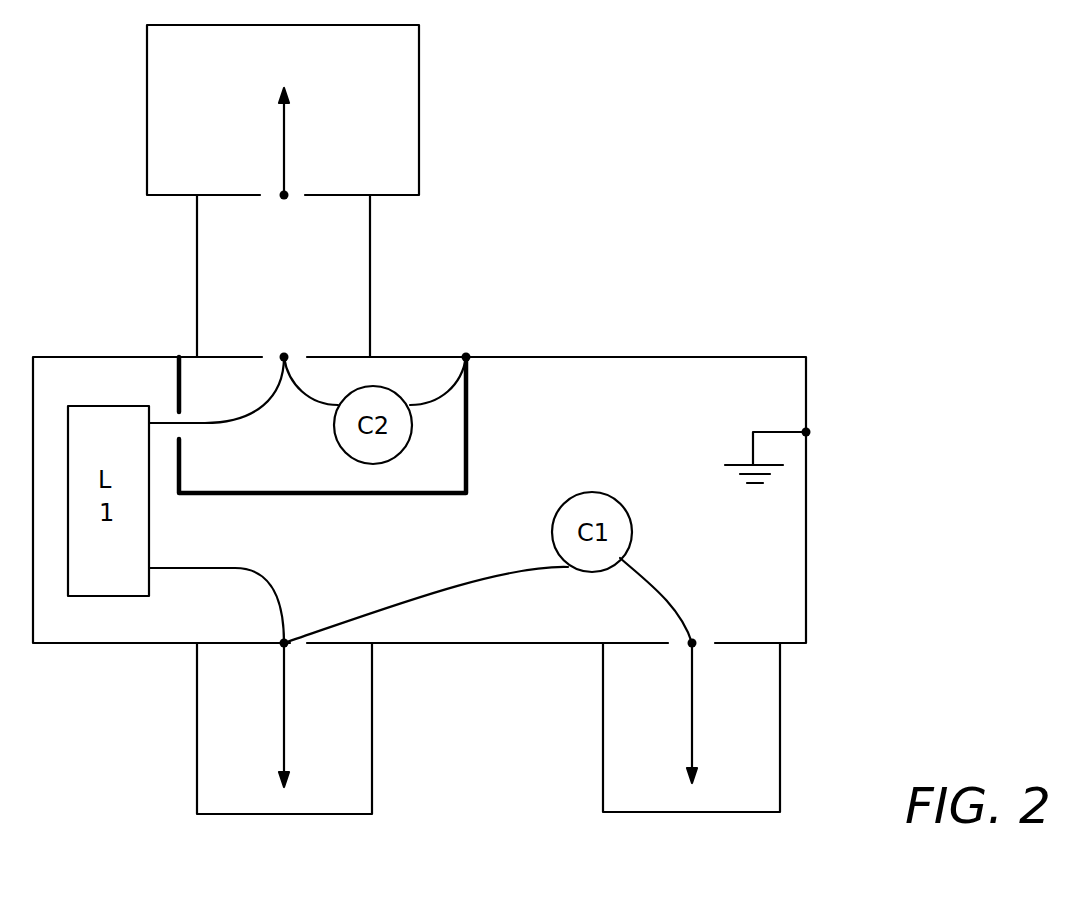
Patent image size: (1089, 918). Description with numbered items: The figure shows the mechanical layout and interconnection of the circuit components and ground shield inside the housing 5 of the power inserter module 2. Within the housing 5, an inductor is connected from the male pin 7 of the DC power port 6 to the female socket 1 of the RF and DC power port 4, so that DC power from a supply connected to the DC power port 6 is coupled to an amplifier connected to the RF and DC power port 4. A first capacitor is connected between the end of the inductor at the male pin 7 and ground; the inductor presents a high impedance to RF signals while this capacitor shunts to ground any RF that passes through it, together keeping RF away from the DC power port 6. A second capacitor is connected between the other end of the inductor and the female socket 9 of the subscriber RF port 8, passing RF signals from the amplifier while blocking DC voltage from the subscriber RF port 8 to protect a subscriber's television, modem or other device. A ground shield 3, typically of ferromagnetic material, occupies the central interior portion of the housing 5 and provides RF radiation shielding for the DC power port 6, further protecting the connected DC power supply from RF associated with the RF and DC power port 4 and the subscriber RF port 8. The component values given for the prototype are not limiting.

The female socket 1 is at (286, 693).
The power inserter module 2 is at (628, 431).
The ground shield 3 is at (178, 388).
The RF and DC power port 4 is at (372, 715).
The housing 5 is at (652, 357).
The DC power port 6 is at (419, 155).
The male pin 7 is at (285, 143).
The subscriber RF port 8 is at (780, 725).
The female socket 9 is at (693, 688).